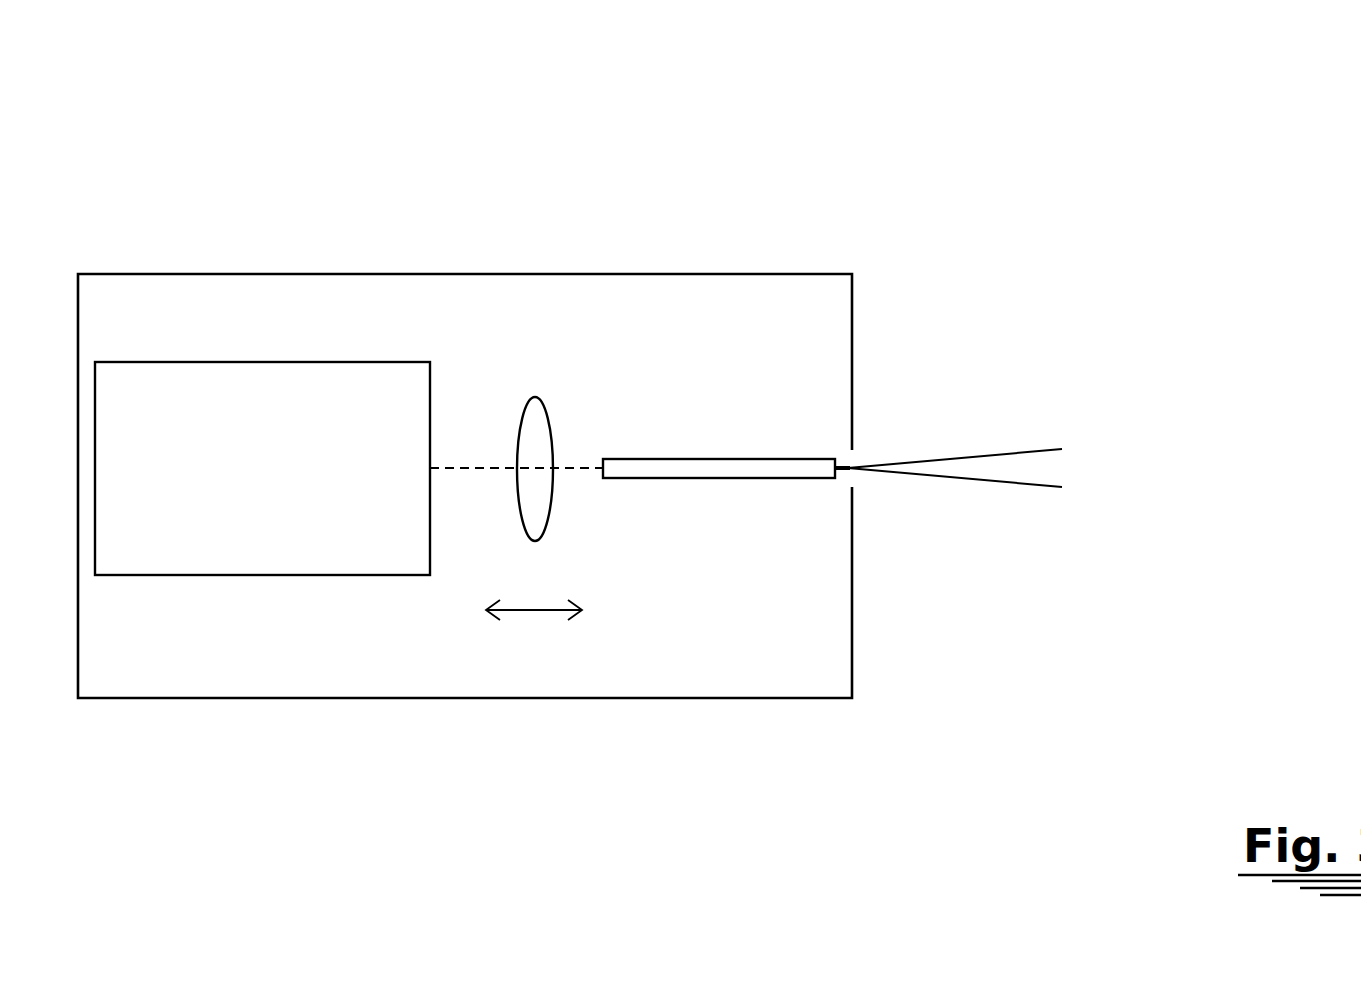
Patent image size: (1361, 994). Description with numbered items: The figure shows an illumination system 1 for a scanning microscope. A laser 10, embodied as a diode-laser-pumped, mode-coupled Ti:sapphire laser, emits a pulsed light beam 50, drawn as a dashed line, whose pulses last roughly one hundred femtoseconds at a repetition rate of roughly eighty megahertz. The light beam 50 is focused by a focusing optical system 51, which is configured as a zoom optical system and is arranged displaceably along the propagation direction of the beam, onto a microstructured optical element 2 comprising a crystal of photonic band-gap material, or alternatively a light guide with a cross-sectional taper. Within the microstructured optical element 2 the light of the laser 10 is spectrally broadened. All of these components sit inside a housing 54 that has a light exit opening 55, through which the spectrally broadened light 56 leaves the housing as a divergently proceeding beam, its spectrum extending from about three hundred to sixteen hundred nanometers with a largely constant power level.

The illumination system 1 is at (318, 162).
The laser 10 is at (270, 382).
The light beam 50 is at (448, 468).
The focusing optical system 51 is at (535, 505).
The microstructured optical element 2 is at (718, 468).
The housing 54 is at (273, 698).
The light exit opening 55 is at (853, 456).
The spectrally broadened light 56 is at (920, 467).